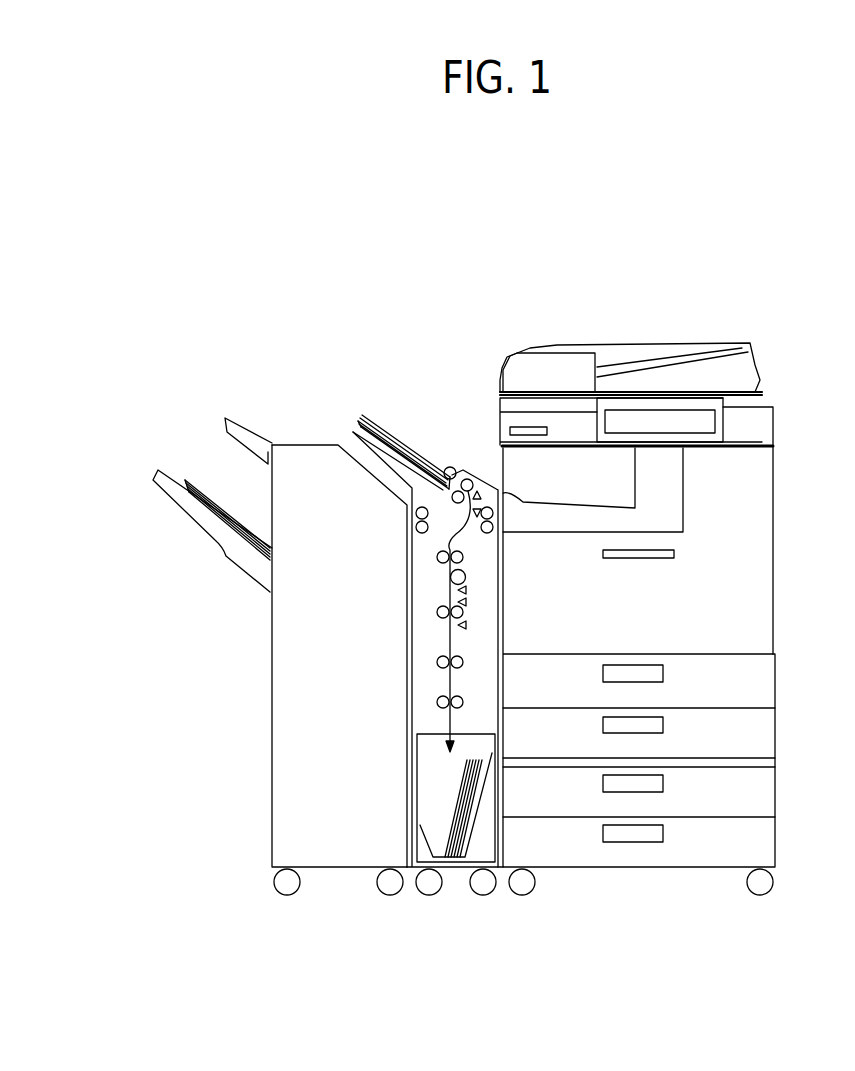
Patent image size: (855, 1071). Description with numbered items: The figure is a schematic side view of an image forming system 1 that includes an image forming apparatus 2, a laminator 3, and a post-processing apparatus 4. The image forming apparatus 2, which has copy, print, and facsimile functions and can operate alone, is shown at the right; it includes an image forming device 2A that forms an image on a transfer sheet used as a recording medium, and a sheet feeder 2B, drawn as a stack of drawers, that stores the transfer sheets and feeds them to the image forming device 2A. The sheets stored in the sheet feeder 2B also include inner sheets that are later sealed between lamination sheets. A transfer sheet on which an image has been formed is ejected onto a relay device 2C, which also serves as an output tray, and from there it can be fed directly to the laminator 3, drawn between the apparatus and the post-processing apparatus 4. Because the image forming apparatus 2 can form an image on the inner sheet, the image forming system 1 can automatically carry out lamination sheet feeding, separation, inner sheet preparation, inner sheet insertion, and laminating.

The image forming system 1 is at (652, 196).
The image forming apparatus 2 is at (607, 344).
The image forming device 2A is at (782, 523).
The sheet feeder 2B is at (780, 867).
The relay device 2C is at (666, 494).
The laminator 3 is at (436, 416).
The post-processing apparatus 4 is at (285, 425).